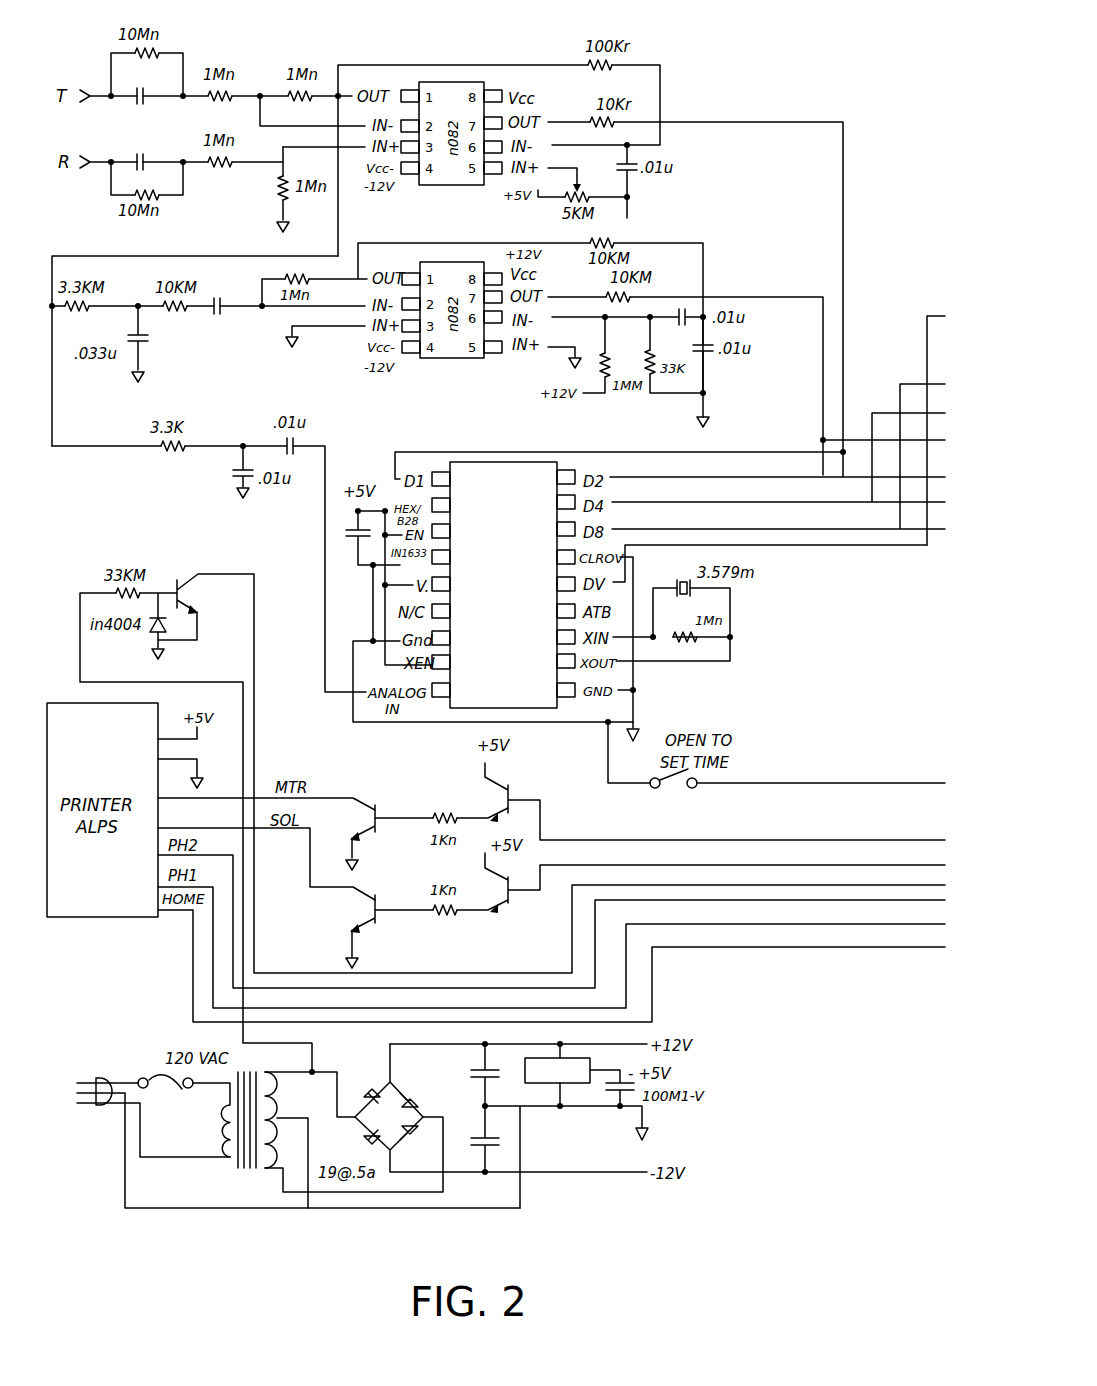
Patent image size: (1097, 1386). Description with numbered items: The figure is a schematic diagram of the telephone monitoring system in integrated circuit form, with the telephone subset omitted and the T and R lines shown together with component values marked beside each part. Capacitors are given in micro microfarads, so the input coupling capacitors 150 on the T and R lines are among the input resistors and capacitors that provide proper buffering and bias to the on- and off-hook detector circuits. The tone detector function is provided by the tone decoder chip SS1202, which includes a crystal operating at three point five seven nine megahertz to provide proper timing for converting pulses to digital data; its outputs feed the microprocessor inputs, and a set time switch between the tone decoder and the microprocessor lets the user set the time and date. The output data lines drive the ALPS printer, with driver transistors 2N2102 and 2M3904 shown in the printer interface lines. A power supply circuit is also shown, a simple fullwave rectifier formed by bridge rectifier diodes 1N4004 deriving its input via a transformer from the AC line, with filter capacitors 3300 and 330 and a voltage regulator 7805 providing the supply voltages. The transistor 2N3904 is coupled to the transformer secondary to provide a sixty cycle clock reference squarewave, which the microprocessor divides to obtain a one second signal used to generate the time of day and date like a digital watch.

The 150 pF input coupling capacitors 150 is at (157, 129).
The tone decoder integrated circuit chip SS1202 is at (503, 585).
The transistor 2N3904 is at (482, 790).
The 2M3904 NPN driver transistors 2M3904 is at (715, 850).
The 2N2102 NPN transistor 2N2102 is at (405, 931).
The 1N4004 bridge rectifier diodes 1N4004 is at (367, 1066).
The 3300 uF 16 V filter capacitor 3300 is at (452, 1075).
The 7805 voltage regulator 7805 is at (557, 1075).
The 330 uF 10 V filter capacitor 330 is at (479, 1139).